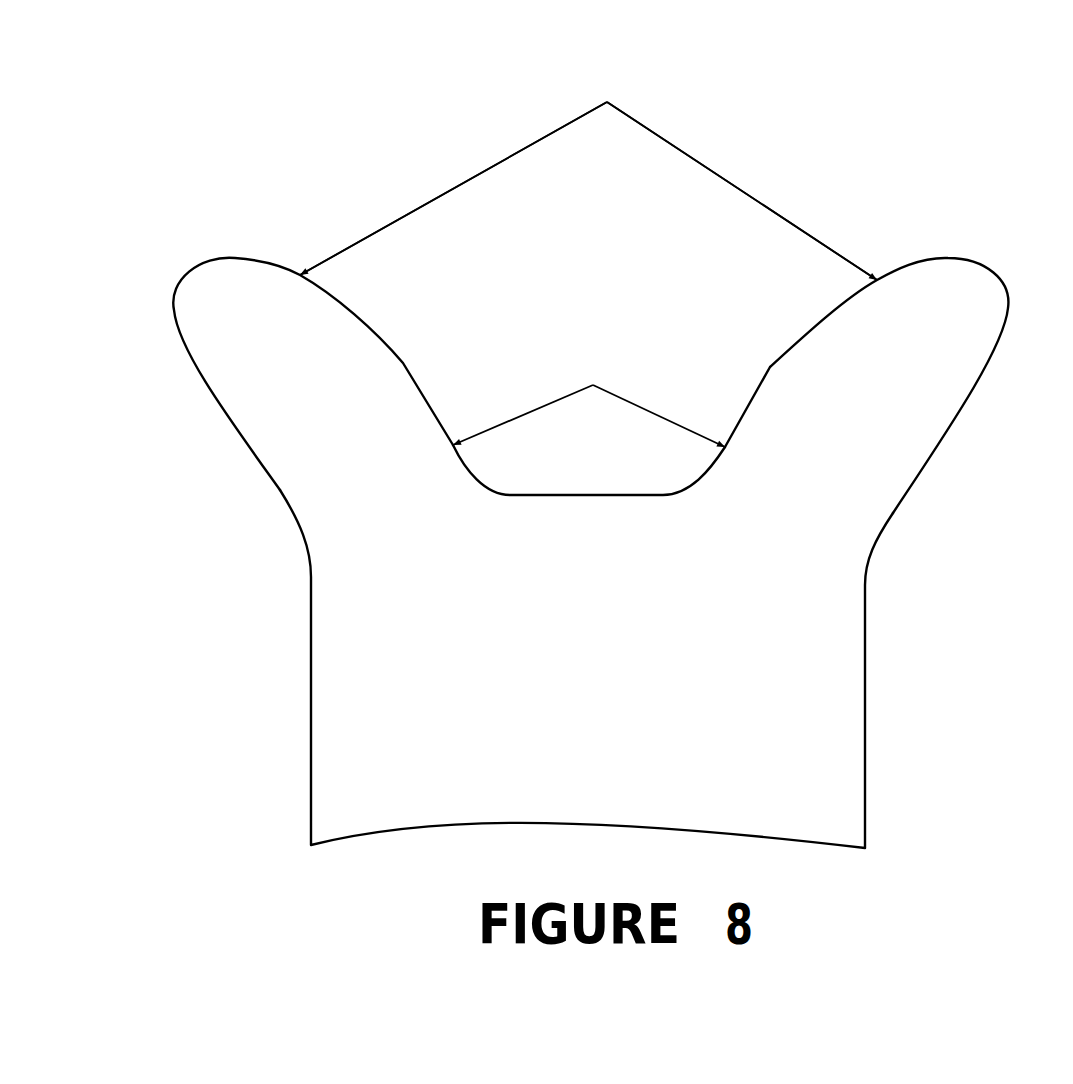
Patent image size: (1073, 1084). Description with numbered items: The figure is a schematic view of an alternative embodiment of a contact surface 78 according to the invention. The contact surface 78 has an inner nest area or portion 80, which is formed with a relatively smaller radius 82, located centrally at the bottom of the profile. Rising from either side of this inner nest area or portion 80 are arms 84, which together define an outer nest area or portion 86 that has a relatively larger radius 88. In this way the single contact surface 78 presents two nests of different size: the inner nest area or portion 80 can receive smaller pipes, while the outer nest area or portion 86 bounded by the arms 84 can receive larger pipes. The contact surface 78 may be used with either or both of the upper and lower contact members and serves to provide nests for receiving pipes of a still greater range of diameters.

The contact surface 78 is at (608, 486).
The inner nest area 80 is at (606, 476).
The relatively smaller radius 82 is at (527, 412).
The arms 84 is at (306, 377).
The outer nest area 86 is at (622, 191).
The relatively larger radius 88 is at (730, 183).